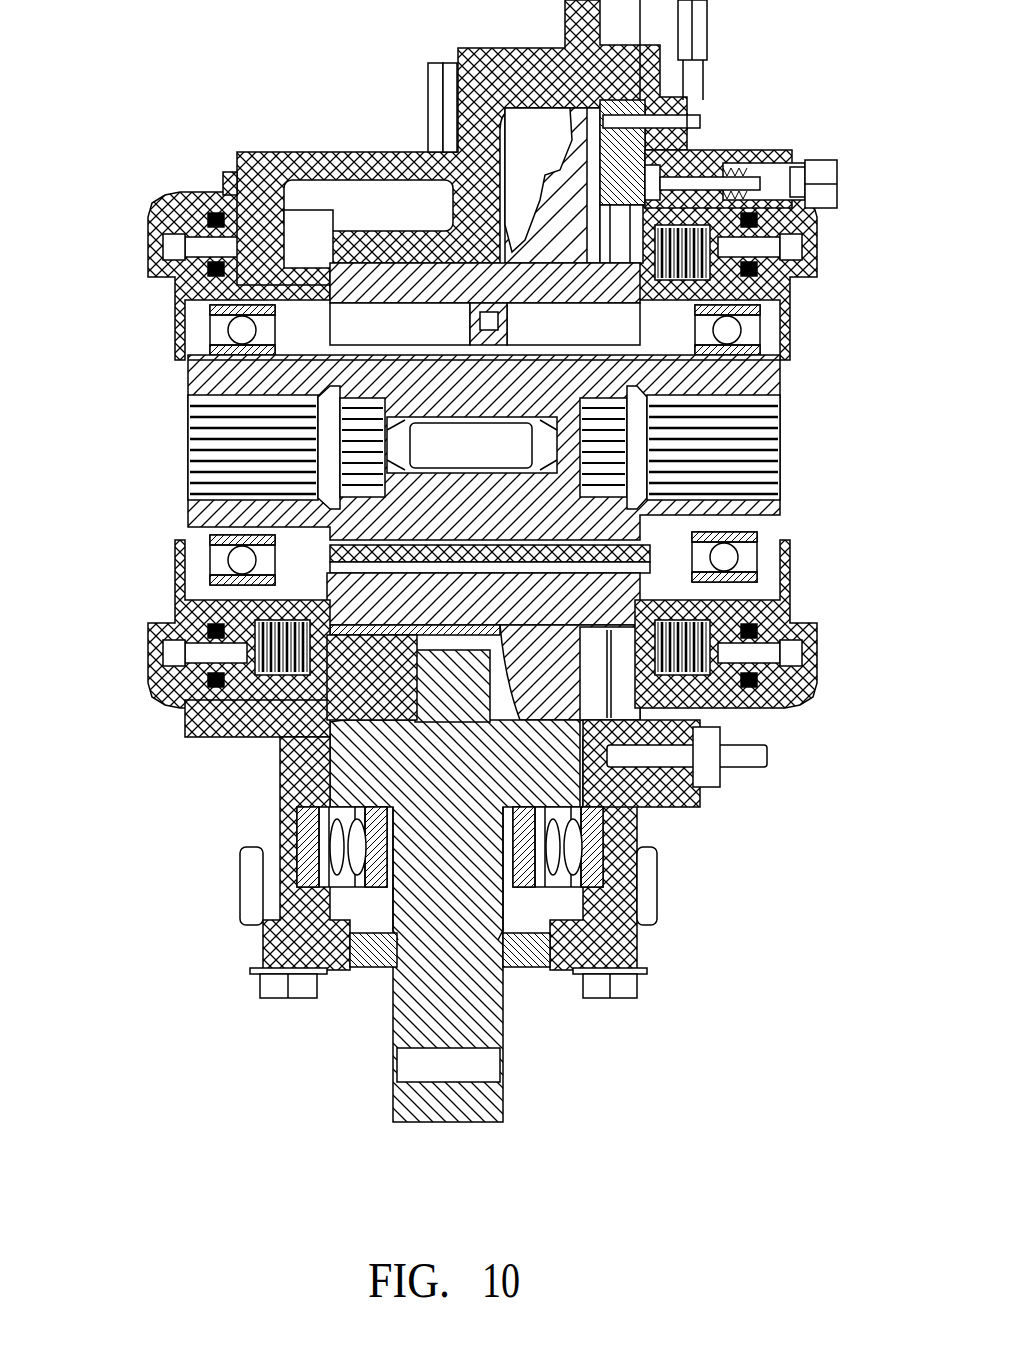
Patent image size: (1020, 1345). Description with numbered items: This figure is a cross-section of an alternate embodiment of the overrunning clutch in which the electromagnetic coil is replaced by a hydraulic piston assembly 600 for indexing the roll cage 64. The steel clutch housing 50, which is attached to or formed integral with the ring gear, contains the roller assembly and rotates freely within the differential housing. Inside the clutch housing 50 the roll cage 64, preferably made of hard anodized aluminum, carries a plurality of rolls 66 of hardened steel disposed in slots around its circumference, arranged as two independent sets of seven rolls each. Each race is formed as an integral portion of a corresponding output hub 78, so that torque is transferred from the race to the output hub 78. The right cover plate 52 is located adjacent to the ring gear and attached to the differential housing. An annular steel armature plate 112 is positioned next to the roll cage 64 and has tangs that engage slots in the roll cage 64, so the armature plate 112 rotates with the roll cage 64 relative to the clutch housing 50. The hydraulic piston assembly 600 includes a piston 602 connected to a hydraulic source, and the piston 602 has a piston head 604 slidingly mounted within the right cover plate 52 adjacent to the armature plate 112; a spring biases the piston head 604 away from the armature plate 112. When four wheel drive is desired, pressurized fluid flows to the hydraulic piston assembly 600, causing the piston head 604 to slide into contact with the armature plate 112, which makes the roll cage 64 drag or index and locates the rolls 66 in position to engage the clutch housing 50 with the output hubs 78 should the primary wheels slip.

The clutch housing 50 is at (280, 747).
The right cover plate 52 is at (835, 275).
The roll cage 64 is at (613, 552).
The rolls 66 is at (420, 330).
The output hub 78 is at (190, 377).
The armature plate 112 is at (717, 700).
The hydraulic piston assembly 600 is at (890, 172).
The piston 602 is at (808, 135).
The piston head 604 is at (700, 147).